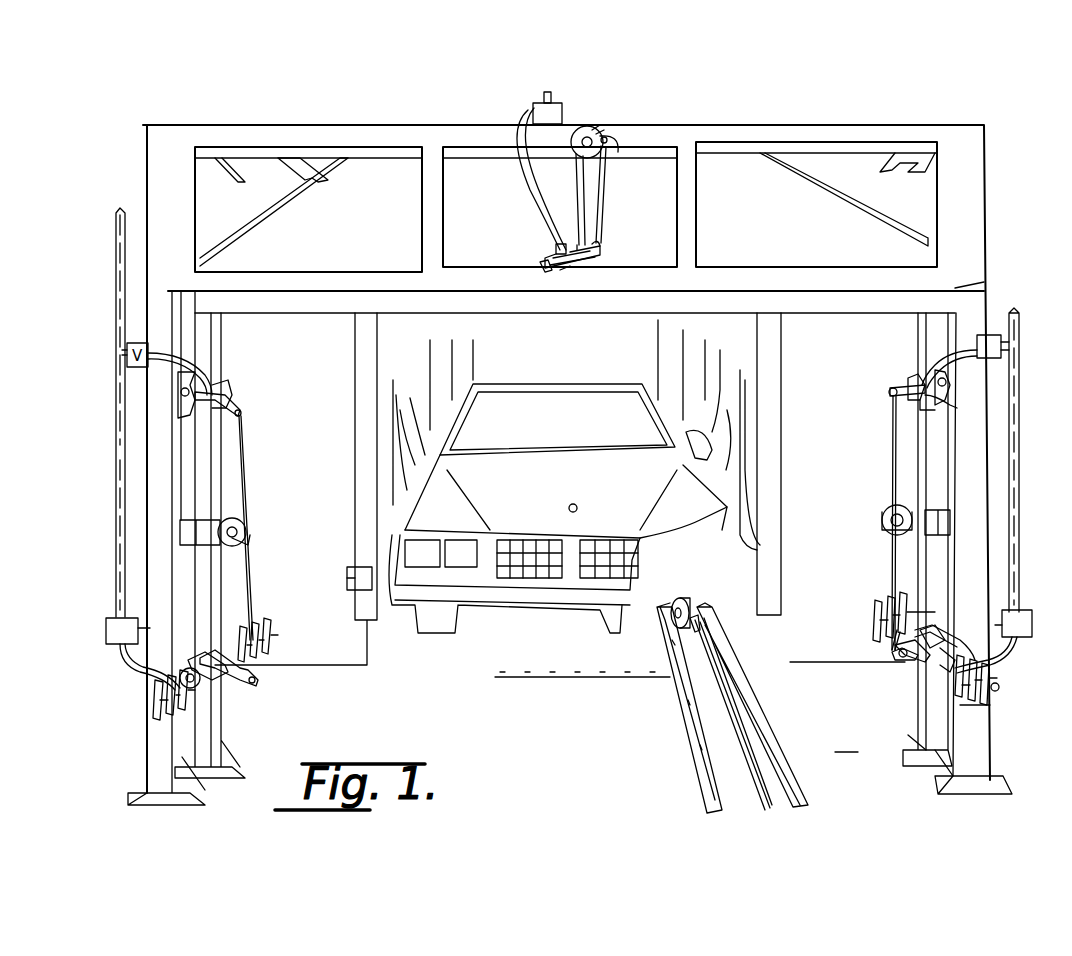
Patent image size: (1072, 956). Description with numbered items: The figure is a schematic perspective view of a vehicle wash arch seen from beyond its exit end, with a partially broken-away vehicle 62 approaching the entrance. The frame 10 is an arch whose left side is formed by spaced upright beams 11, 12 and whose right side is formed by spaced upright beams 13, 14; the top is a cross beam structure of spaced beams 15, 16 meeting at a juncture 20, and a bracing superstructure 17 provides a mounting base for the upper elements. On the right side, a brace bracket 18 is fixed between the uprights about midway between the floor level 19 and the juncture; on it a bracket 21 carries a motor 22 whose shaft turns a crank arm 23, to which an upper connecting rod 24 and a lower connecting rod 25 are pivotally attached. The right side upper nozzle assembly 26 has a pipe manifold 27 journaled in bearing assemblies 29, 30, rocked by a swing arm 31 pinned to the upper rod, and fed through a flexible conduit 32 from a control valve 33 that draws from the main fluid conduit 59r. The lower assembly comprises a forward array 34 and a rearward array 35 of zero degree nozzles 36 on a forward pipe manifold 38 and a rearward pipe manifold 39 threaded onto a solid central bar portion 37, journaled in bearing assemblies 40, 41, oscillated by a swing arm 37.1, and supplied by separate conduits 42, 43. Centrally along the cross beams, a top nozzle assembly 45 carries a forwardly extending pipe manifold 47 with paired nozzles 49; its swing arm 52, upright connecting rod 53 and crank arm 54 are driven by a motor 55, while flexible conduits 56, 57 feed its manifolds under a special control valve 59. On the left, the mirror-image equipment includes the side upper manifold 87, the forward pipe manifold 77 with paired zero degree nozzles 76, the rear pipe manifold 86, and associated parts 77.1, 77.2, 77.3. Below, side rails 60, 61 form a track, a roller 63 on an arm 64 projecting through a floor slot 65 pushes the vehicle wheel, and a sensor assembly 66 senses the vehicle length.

The frame 10 is at (1025, 148).
The upright beam 11 is at (158, 470).
The upright beam 12 is at (200, 494).
The upright beam 13 is at (975, 462).
The upright beam 14 is at (933, 450).
The cross beam 15 is at (322, 285).
The cross beam 16 is at (316, 308).
The superstructure 17 is at (385, 135).
The brace bracket 18 is at (950, 525).
The floor level 19 is at (846, 742).
The juncture 20 is at (960, 292).
The bracket 21 is at (915, 528).
The motor 22 is at (902, 510).
The crank arm 23 is at (890, 532).
The upper connecting rod 24 is at (890, 426).
The lower connecting rod 25 is at (890, 570).
The right side upper nozzle assembly 26 is at (870, 382).
The pipe manifold 27 is at (950, 410).
The bearing assembly 29 is at (948, 378).
The bearing assembly 30 is at (915, 397).
The swing arm 31 is at (905, 380).
The flexible conduit 32 is at (985, 335).
The control valve 33 is at (1020, 343).
The forward array of zero degree solid stream nozzles 34 is at (1000, 660).
The rearward array 35 is at (866, 618).
The zero degree nozzles 36 is at (985, 712).
The central bar portion 37 is at (950, 645).
The swing arm 37.1 is at (915, 665).
The forward pipe manifold 38 is at (1000, 690).
The rearward pipe manifold 39 is at (876, 606).
The bearing assembly 40 is at (948, 662).
The bearing assembly 41 is at (900, 638).
The conduit 42 is at (1000, 650).
The conduit 43 is at (955, 608).
The top nozzle assembly 45 is at (562, 273).
The forwardly extending pipe manifold 47 is at (552, 250).
The paired nozzles 49 is at (596, 258).
The swing arm 52 is at (576, 245).
The upright connecting rod 53 is at (605, 210).
The crank arm 54 is at (615, 153).
The motor 55 is at (605, 132).
The flexible conduit 56 is at (578, 182).
The flexible conduit 57 is at (530, 188).
The control valve 59 is at (555, 98).
The main fluid conduit 59r is at (1020, 413).
The side rail 60 is at (695, 740).
The side rail 61 is at (778, 712).
The vehicle 62 is at (560, 473).
The roller 63 is at (678, 623).
The arm 64 is at (700, 627).
The floor slot 65 is at (718, 672).
The sensor assembly 66 is at (358, 567).
The zero degree nozzles 76 is at (158, 718).
The forward pipe manifold 77 is at (150, 705).
The pulley 77.1 is at (215, 682).
The cable 77.2 is at (252, 565).
The arm 77.3 is at (243, 677).
The rear pipe manifold 86 is at (268, 645).
The side upper manifold 87 is at (226, 392).